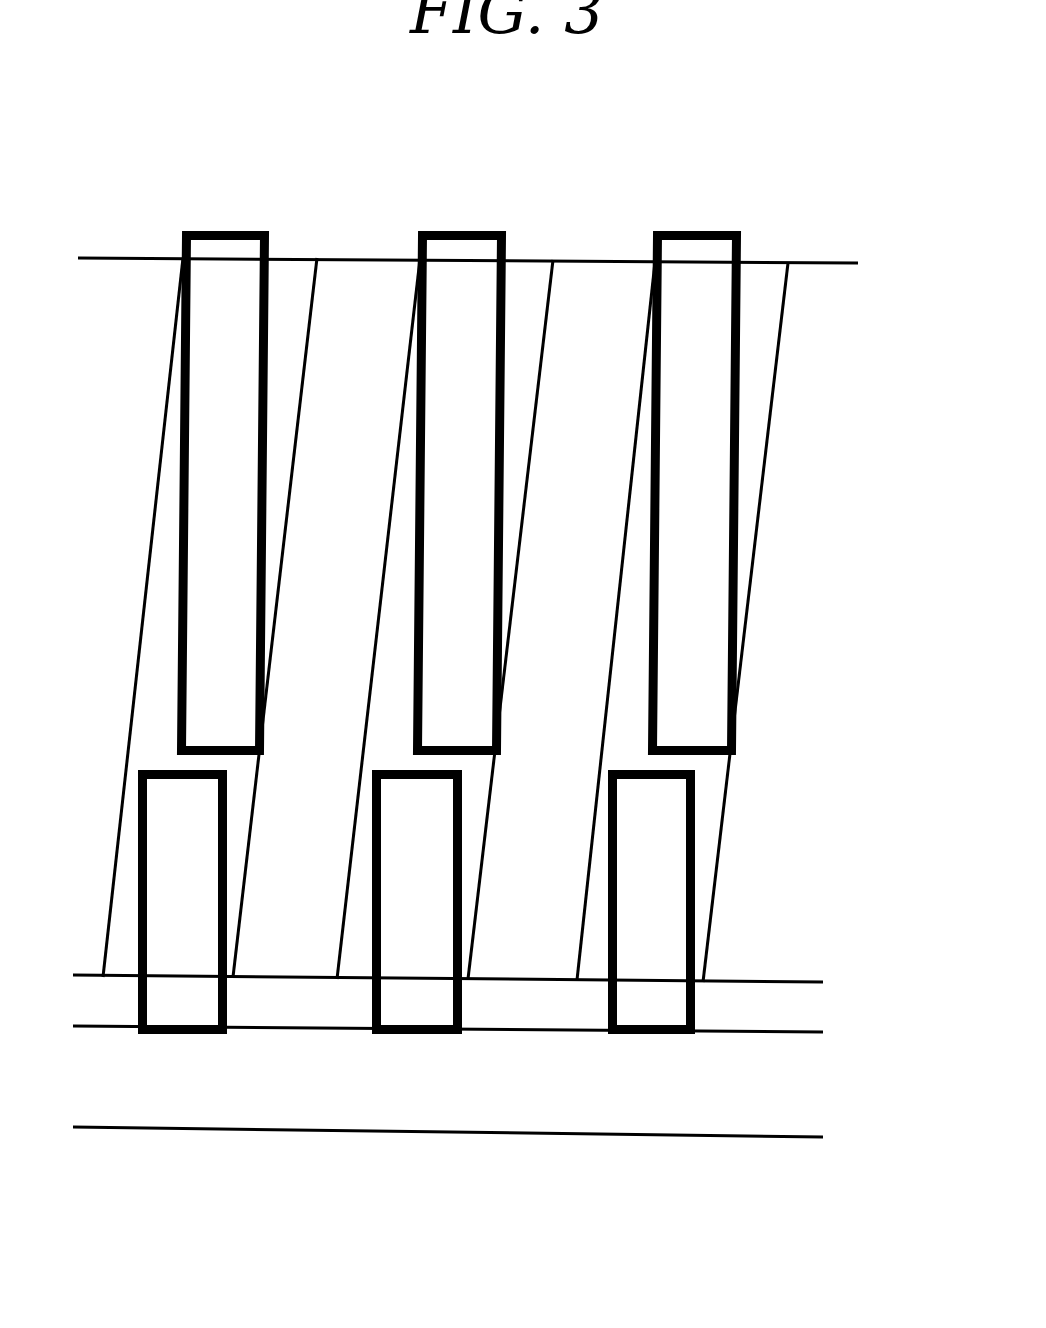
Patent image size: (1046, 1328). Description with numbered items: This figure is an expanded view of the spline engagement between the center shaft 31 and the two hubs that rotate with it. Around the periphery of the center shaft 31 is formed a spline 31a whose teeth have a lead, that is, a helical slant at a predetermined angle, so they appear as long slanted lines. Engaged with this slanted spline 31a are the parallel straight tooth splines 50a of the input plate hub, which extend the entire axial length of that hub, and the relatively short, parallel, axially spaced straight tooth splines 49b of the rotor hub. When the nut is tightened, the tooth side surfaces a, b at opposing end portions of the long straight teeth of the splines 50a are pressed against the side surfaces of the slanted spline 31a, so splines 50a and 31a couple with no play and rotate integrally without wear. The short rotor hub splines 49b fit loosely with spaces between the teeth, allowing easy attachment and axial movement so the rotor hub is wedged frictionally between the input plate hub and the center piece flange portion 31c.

The center shaft 31 is at (836, 260).
The spline 31a is at (783, 291).
The center piece flange portion 31c is at (656, 1115).
The input plate hub splines 50a is at (715, 488).
The rotor hub splines 49b is at (667, 887).
The tooth side surface a is at (653, 277).
The tooth side surface b is at (733, 745).